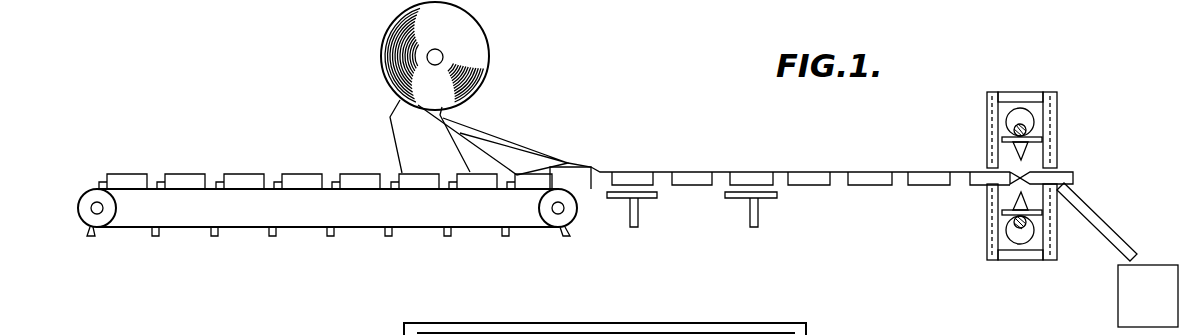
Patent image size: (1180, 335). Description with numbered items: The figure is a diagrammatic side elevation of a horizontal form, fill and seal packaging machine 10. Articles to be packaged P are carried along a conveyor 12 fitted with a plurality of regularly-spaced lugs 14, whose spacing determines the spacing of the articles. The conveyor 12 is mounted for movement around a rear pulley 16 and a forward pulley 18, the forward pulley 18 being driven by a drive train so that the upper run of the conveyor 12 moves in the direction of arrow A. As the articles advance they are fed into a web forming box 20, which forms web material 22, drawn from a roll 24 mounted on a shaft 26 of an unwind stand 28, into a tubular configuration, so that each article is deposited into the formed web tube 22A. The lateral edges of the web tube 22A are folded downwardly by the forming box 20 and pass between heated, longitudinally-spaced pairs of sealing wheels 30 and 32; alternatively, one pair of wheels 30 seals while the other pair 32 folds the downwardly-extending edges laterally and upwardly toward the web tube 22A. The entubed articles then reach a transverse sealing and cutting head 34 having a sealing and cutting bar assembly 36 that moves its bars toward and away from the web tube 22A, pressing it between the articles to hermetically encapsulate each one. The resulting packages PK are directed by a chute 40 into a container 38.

The packaging machine 10 is at (789, 135).
The conveyor 12 is at (327, 228).
The lugs 14 is at (217, 231).
The rear pulley 16 is at (103, 210).
The forward pulley 18 is at (540, 205).
The web forming box 20 is at (582, 167).
The web material 22 is at (520, 157).
The web tube 22A is at (662, 172).
The roll 24 is at (458, 56).
The shaft 26 is at (442, 61).
The unwind stand 28 is at (390, 137).
The sealing wheels 30 is at (652, 198).
The sealing wheels 32 is at (768, 195).
The transverse sealing and cutting head 34 is at (994, 167).
The sealing and cutting bar assembly 36 is at (1012, 157).
The container 38 is at (1118, 298).
The chute 40 is at (1113, 240).
The articles to be packaged P is at (125, 180).
The arrow A is at (330, 202).
The packages PK is at (1067, 173).